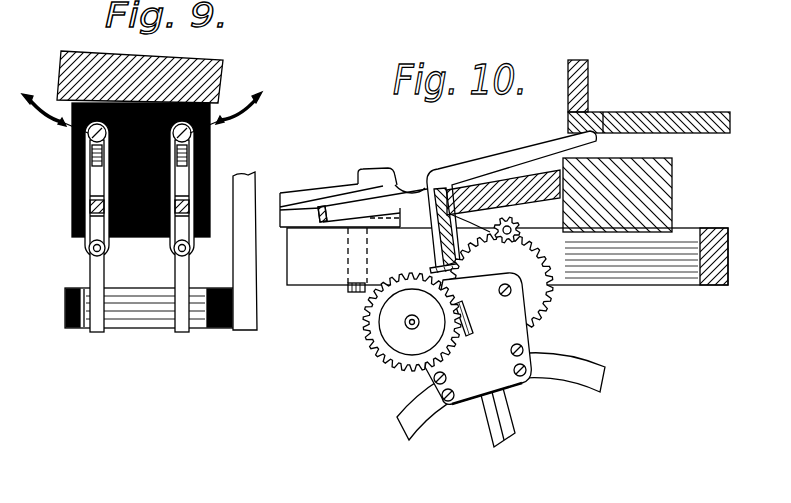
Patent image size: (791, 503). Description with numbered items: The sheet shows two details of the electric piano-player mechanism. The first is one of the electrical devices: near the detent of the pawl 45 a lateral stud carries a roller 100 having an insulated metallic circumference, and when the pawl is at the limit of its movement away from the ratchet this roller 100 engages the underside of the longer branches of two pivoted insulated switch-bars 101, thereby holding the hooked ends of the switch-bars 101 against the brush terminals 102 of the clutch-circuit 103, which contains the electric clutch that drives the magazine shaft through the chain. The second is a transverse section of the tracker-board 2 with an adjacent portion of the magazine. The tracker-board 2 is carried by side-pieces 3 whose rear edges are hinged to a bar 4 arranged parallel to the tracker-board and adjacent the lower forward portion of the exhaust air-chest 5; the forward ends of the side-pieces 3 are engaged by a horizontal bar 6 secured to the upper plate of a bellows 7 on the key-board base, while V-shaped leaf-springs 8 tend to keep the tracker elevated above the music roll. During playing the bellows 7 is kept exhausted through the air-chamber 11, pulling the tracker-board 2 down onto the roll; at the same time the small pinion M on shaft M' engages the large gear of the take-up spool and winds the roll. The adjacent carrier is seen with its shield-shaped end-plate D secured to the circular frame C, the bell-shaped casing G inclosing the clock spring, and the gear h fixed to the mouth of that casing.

In FIG. 9, the roller 100 is at (115, 323).
In FIG. 9, the switch-bars 101 is at (176, 272).
In FIG. 9, the brush terminals 102 is at (75, 157).
In FIG. 9, the clutch-circuit 103 is at (256, 101).
In FIG. 9, the pawl 45 is at (245, 289).
In FIG. 10, the tracker-board 2 is at (433, 258).
In FIG. 10, the side-pieces 3 is at (487, 175).
In FIG. 10, the bar 4 is at (672, 186).
In FIG. 10, the exhaust air-chest 5 is at (665, 118).
In FIG. 10, the horizontal bar 6 is at (385, 180).
In FIG. 10, the bellows 7 is at (298, 192).
In FIG. 10, the leaf-springs 8 is at (470, 232).
In FIG. 10, the air-chamber 11 is at (550, 302).
In FIG. 10, the pinion M is at (518, 222).
In FIG. 10, the shaft M' is at (534, 239).
In FIG. 10, the circular frame C is at (501, 379).
In FIG. 10, the end-plates D is at (478, 338).
In FIG. 10, the casing G is at (383, 331).
In FIG. 10, the gear h is at (390, 363).